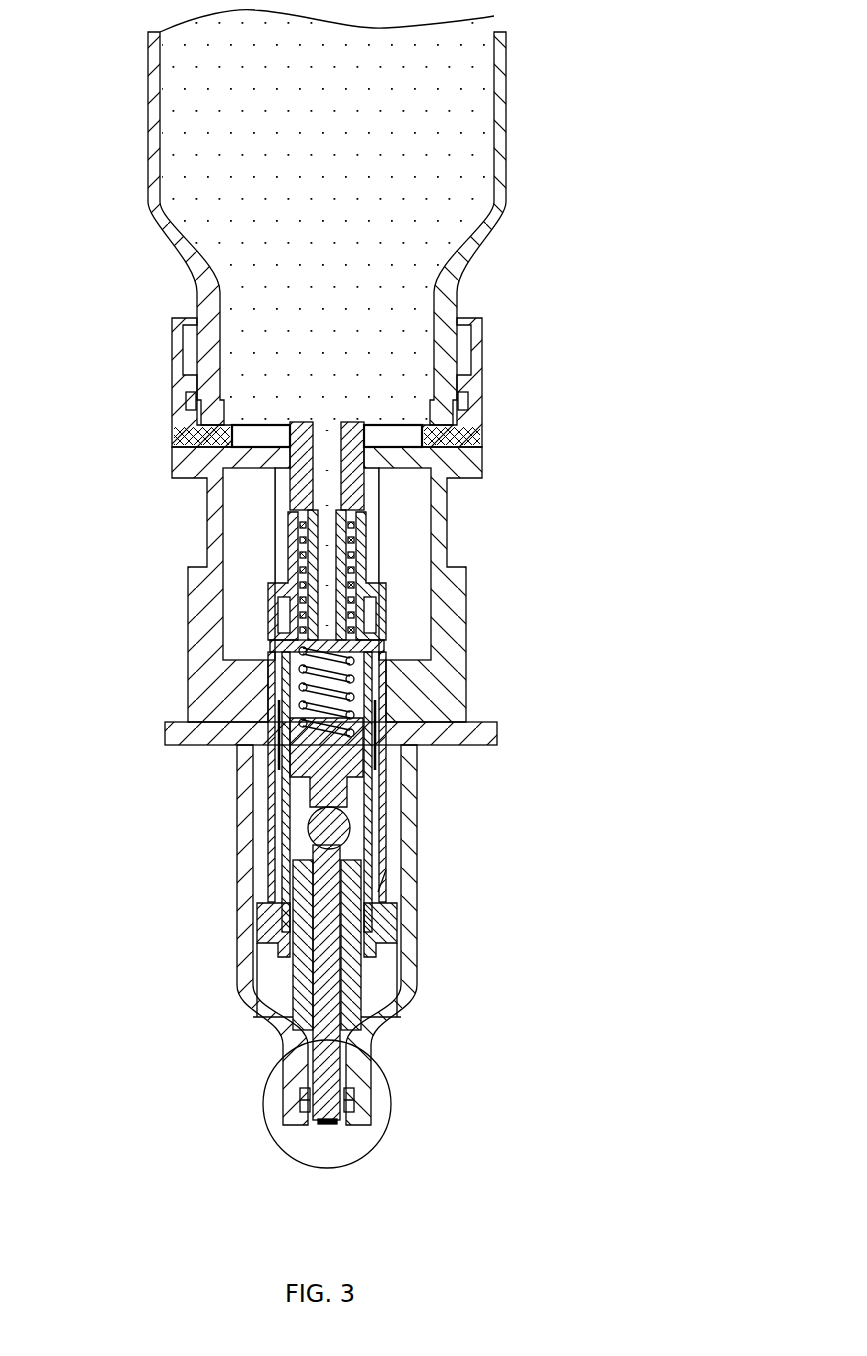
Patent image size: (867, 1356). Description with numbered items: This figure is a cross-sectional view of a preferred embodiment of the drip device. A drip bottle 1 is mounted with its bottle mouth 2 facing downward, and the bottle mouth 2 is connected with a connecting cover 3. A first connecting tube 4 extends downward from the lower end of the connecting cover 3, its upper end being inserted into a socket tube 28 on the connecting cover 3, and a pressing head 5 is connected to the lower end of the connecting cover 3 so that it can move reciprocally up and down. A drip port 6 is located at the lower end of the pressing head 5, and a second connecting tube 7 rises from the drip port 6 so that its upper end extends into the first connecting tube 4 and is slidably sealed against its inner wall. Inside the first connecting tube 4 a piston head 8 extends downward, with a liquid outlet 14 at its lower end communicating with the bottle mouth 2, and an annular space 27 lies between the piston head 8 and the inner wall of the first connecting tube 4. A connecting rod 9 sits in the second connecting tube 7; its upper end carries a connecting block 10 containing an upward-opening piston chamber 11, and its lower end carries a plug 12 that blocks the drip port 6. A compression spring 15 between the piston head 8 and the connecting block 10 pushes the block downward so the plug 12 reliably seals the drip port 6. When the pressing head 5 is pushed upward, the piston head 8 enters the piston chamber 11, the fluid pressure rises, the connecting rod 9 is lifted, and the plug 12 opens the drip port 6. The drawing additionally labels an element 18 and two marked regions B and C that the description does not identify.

The drip bottle 1 is at (193, 178).
The bottle mouth 2 is at (262, 365).
The connecting cover 3 is at (465, 430).
The first connecting tube 4 is at (272, 648).
The pressing head 5 is at (240, 877).
The drip port 6 is at (323, 1123).
The second connecting tube 7 is at (303, 975).
The piston head 8 is at (283, 600).
The connecting rod 9 is at (323, 943).
The connecting block 10 is at (277, 763).
The piston chamber 11 is at (280, 690).
The plug 12 is at (307, 1105).
The liquid outlet 14 is at (350, 652).
The compression spring 15 is at (370, 748).
The spring 18 is at (355, 573).
The annular space 27 is at (365, 615).
The socket tube 28 is at (285, 523).
The detail region B is at (385, 1138).
The detail region C is at (382, 880).